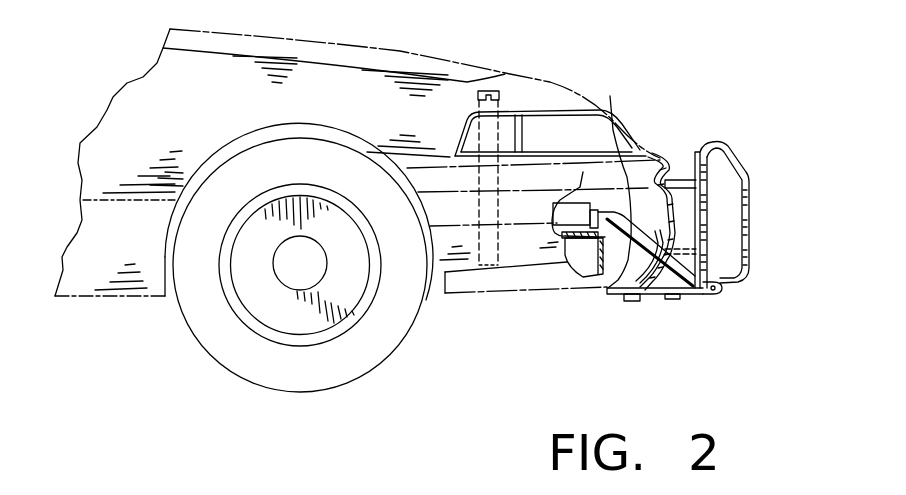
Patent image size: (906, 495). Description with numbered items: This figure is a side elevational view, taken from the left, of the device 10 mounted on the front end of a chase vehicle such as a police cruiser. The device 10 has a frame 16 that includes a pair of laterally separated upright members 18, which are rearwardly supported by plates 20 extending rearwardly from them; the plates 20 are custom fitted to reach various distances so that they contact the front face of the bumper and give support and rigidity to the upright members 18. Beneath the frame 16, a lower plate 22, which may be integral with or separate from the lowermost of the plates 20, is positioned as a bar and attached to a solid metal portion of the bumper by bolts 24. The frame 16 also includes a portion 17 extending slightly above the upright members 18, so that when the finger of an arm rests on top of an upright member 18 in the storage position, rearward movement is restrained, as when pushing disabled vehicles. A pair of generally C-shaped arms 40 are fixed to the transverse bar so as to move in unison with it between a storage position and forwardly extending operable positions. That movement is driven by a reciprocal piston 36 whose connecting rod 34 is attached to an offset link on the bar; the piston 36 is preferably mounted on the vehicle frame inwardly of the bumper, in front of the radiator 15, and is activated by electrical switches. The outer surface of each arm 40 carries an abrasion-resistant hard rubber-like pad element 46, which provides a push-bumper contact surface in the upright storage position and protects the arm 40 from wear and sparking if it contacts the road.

The device 10 is at (687, 206).
The radiator 15 is at (500, 102).
The frame 16 is at (683, 158).
The portion 17 is at (700, 153).
The upright members 18 is at (750, 272).
The plates 20 is at (617, 297).
The lower plate 22 is at (653, 297).
The bolts 24 is at (633, 302).
The connecting rod 34 is at (614, 176).
The reciprocal piston 36 is at (583, 172).
The arms 40 is at (767, 206).
The pad element 46 is at (751, 243).